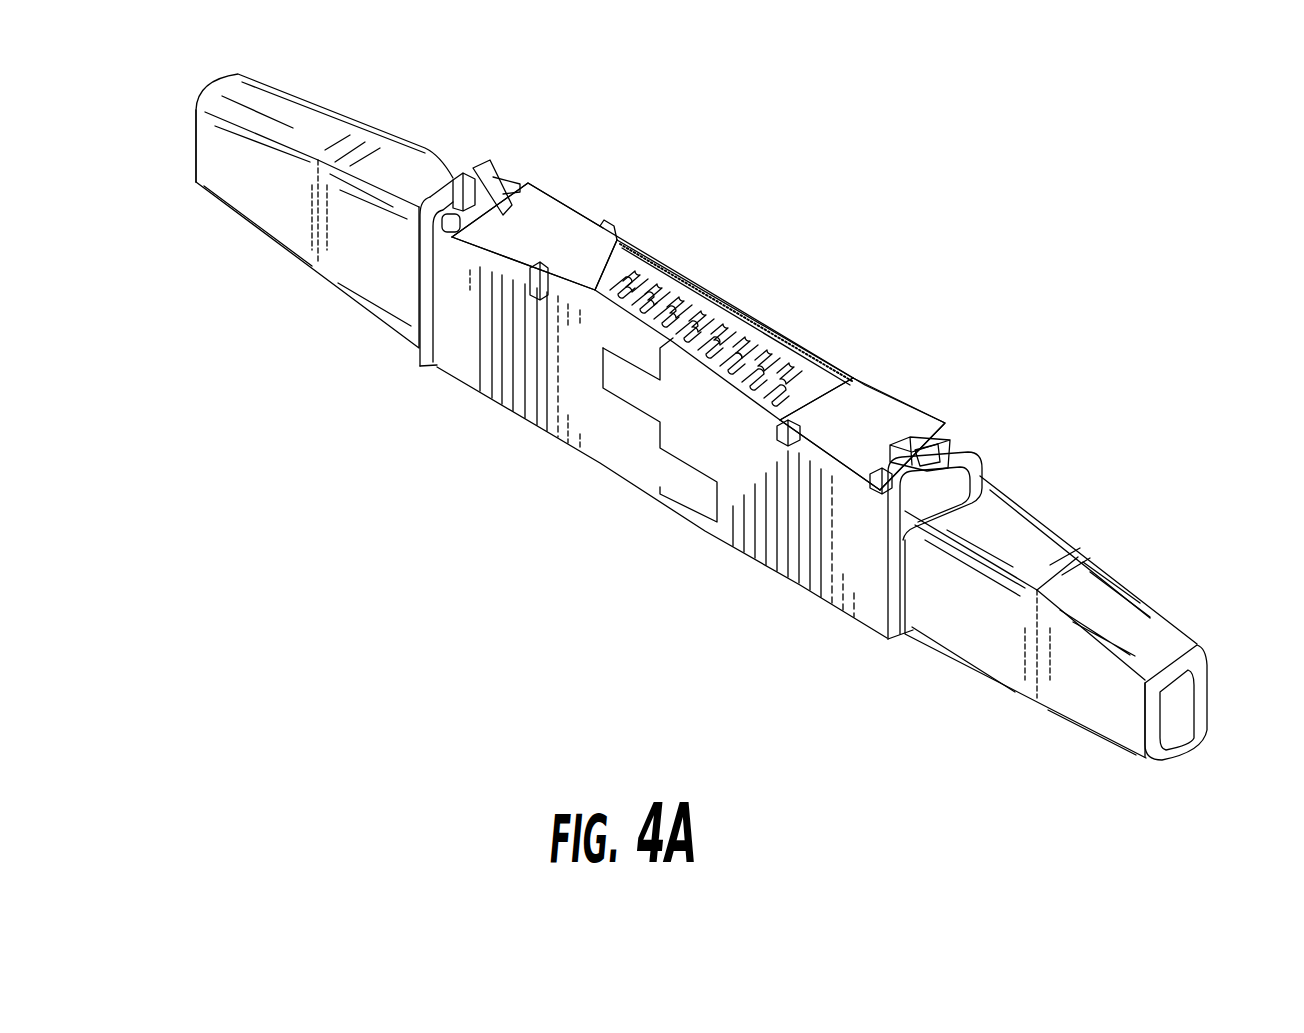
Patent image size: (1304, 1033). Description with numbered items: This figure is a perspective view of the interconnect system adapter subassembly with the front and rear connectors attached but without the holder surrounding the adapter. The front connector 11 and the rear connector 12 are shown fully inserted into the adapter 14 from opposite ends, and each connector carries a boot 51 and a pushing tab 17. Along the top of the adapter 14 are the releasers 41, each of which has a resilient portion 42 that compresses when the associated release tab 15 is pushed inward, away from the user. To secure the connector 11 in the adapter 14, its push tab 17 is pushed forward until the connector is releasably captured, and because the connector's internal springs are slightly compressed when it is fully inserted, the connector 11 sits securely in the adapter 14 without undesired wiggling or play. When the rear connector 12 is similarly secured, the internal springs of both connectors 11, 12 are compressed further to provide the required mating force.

The front connector 11 is at (980, 620).
The rear connector 12 is at (387, 263).
The adapter 14 is at (580, 494).
The release tab 15 is at (483, 160).
The pushing tab 17 is at (913, 555).
The releaser 41 is at (553, 237).
The resilient portion 42 is at (782, 330).
The boot 51 is at (207, 152).